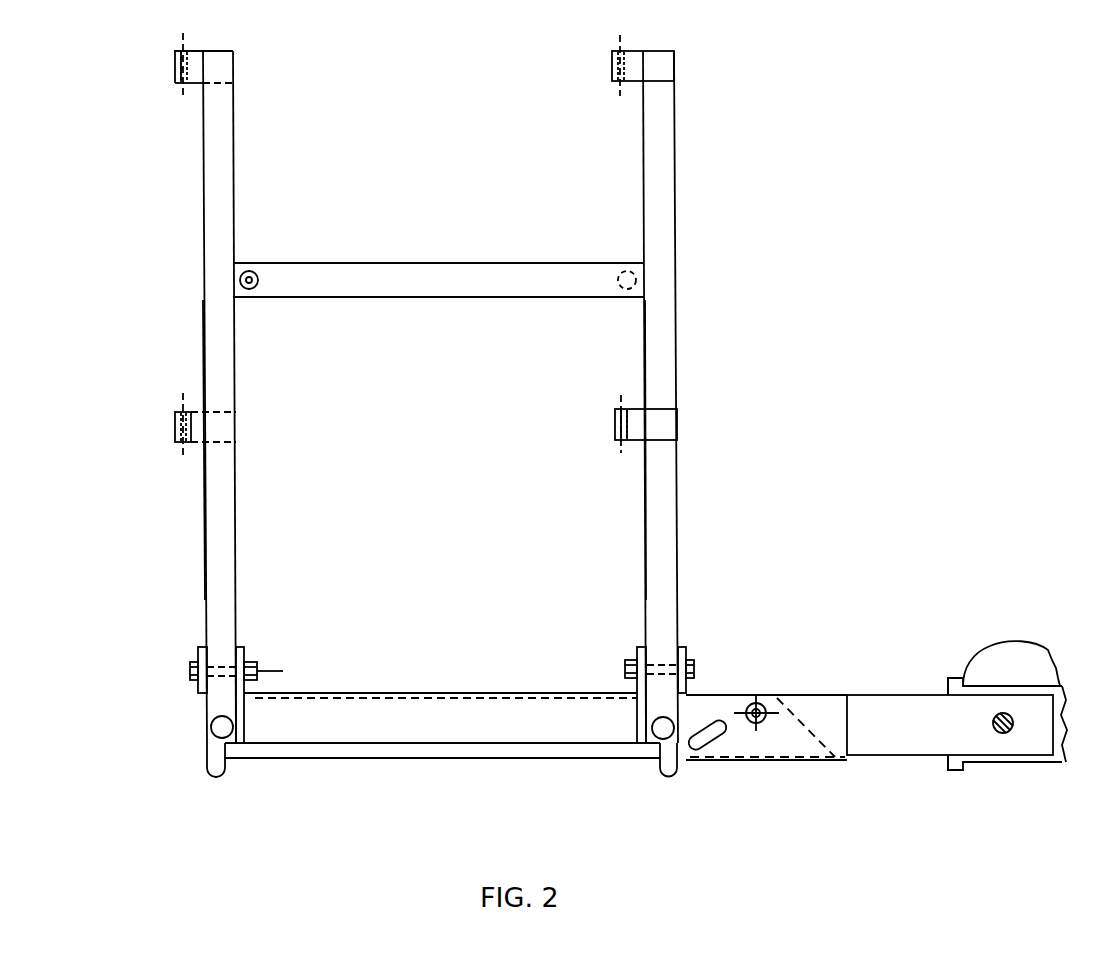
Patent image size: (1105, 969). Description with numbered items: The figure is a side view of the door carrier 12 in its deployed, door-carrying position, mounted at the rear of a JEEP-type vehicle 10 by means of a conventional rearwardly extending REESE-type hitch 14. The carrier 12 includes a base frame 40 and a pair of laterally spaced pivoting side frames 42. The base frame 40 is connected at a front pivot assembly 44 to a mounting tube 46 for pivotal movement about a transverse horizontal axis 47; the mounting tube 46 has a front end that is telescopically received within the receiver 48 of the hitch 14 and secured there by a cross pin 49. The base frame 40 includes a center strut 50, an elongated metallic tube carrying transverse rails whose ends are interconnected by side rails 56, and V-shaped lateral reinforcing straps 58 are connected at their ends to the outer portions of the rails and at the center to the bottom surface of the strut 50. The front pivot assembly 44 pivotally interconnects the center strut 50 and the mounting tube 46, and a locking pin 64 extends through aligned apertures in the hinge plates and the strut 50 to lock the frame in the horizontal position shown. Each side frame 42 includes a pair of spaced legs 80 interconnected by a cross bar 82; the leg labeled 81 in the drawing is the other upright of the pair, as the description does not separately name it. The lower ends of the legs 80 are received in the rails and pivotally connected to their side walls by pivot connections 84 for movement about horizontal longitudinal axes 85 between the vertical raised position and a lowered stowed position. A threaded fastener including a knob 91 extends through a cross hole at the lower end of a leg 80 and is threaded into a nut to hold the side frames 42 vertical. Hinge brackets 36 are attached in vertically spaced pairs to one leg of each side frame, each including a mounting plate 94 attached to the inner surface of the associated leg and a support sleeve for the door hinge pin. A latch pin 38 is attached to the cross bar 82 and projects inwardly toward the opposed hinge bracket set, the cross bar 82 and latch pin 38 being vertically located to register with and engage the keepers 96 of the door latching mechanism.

The vehicle 10 is at (980, 647).
The door carrier 12 is at (742, 176).
The hitch 14 is at (1002, 765).
The hinge brackets 36 is at (173, 73).
The latch pin 38 is at (240, 278).
The base frame 40 is at (583, 761).
The side frames 42 is at (204, 567).
The front pivot assembly 44 is at (771, 762).
The mounting tube 46 is at (896, 694).
The transverse horizontal axis 47 is at (751, 703).
The receiver 48 is at (961, 772).
The cross pin 49 is at (994, 722).
The center strut 50 is at (417, 755).
The side rails 56 is at (453, 692).
The lateral reinforcing straps 58 is at (218, 772).
The locking pin 64 is at (709, 739).
The legs 80 is at (656, 556).
The left upright 81 is at (235, 537).
The cross bar 82 is at (361, 298).
The pivot connections 84 is at (189, 661).
The horizontal longitudinal axes 85 is at (180, 673).
The knob 91 is at (214, 731).
The mounting plate 94 is at (194, 51).
The keepers 96 is at (615, 418).